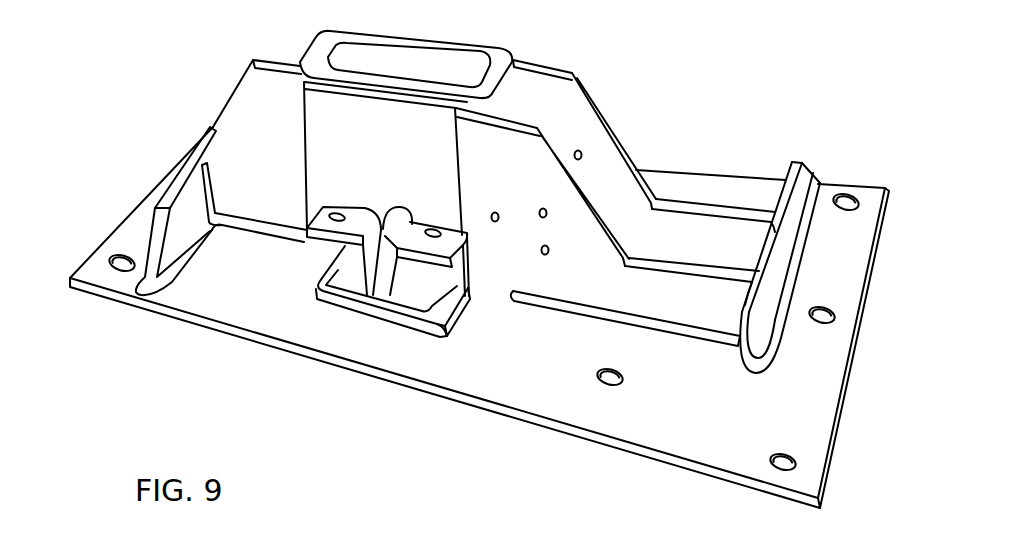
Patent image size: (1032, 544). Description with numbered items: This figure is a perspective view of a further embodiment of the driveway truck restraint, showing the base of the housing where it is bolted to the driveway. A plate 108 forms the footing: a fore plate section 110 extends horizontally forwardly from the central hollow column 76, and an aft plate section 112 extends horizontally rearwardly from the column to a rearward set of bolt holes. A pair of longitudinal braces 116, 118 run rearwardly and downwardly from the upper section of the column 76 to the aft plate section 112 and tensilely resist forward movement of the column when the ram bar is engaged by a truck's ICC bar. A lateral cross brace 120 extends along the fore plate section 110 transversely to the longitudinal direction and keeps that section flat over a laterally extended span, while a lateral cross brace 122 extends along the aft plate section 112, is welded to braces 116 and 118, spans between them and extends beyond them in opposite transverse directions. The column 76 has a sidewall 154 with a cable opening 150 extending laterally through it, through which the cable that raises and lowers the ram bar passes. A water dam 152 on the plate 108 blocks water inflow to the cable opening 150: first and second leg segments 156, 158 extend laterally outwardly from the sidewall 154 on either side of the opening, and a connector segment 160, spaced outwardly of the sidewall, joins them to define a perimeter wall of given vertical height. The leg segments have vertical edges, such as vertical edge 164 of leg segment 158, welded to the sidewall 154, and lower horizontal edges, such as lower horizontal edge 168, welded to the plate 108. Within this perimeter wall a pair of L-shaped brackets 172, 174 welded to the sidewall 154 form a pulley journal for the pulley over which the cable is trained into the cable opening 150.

The central hollow column 76 is at (278, 124).
The plate 108 is at (206, 329).
The fore plate section 110 is at (125, 218).
The aft plate section 112 is at (830, 396).
The longitudinal brace 116 is at (616, 237).
The longitudinal brace 118 is at (624, 145).
The lateral cross brace 120 is at (171, 193).
The lateral cross brace 122 is at (805, 165).
The cable opening 150 is at (397, 213).
The water dam 152 is at (315, 308).
The sidewall 154 is at (327, 172).
The first leg segment 156 is at (318, 276).
The second leg segment 158 is at (447, 300).
The connector segment 160 is at (382, 318).
The vertical edge 164 is at (467, 233).
The lower horizontal edge 168 is at (447, 338).
The L-shaped bracket 172 is at (362, 210).
The L-shaped bracket 174 is at (453, 230).